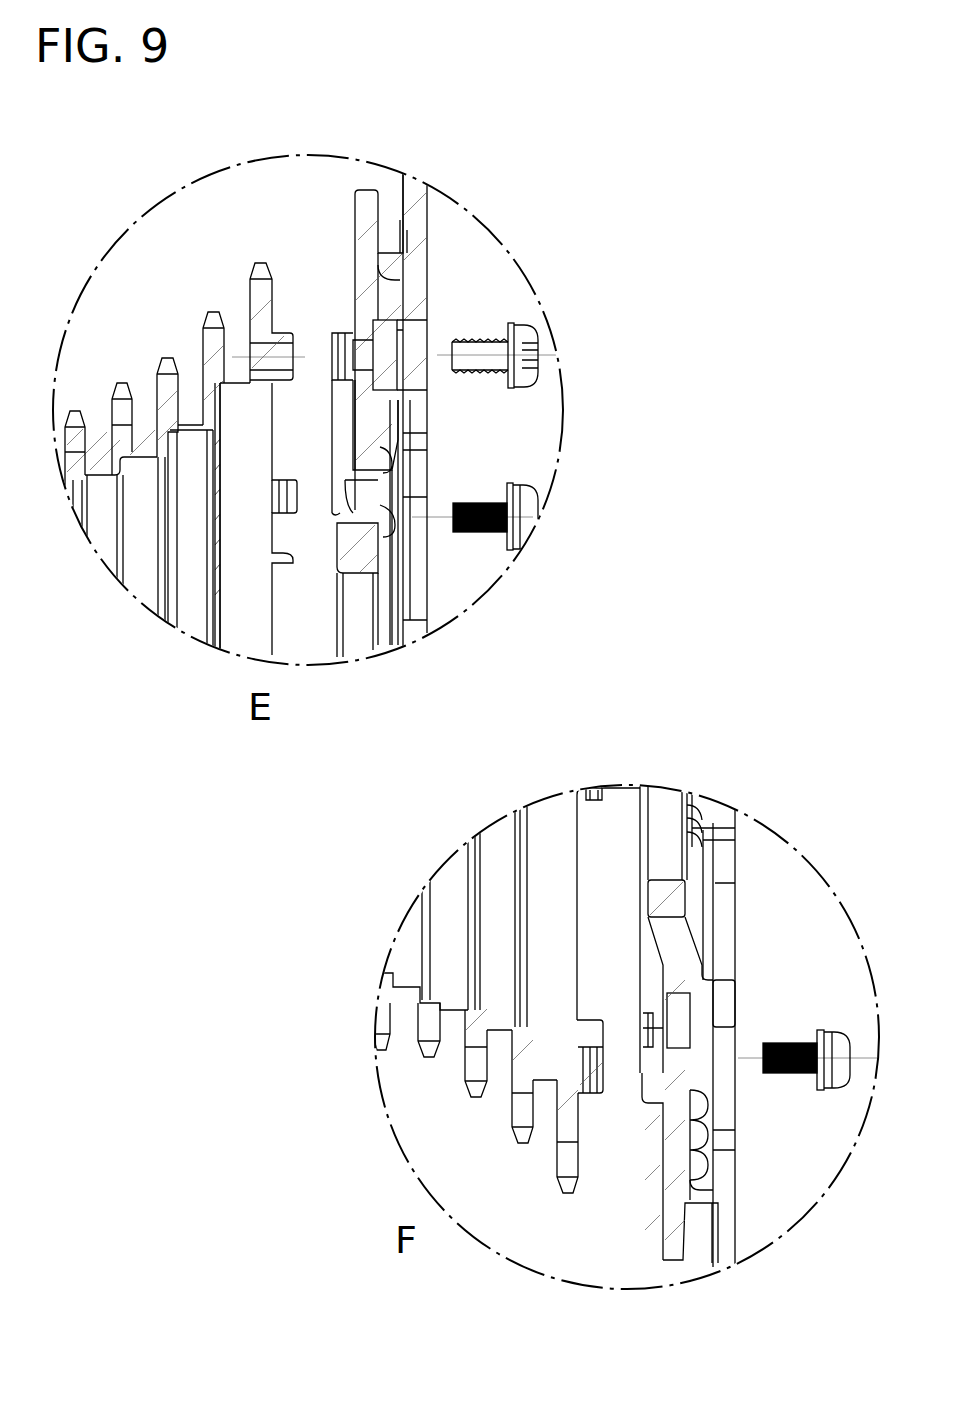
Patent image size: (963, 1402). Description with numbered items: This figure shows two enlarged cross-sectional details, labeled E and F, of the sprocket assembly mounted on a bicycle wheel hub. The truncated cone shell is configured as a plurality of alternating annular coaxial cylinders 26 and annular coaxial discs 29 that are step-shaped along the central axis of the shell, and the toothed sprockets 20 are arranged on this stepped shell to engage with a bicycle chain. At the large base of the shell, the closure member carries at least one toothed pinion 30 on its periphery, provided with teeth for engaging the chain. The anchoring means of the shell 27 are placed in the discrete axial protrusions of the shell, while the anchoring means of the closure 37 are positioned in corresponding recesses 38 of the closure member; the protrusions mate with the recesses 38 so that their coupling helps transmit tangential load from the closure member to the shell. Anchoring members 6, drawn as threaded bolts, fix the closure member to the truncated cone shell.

The anchoring members 6 is at (467, 358).
The toothed sprockets 20 is at (170, 373).
The annular coaxial cylinders 26 is at (146, 440).
The anchoring means of the shell 27 is at (262, 350).
The annular coaxial discs 29 is at (203, 362).
The toothed pinion 30 is at (367, 212).
The anchoring means of the closure 37 is at (383, 350).
The recesses 38 is at (640, 1027).